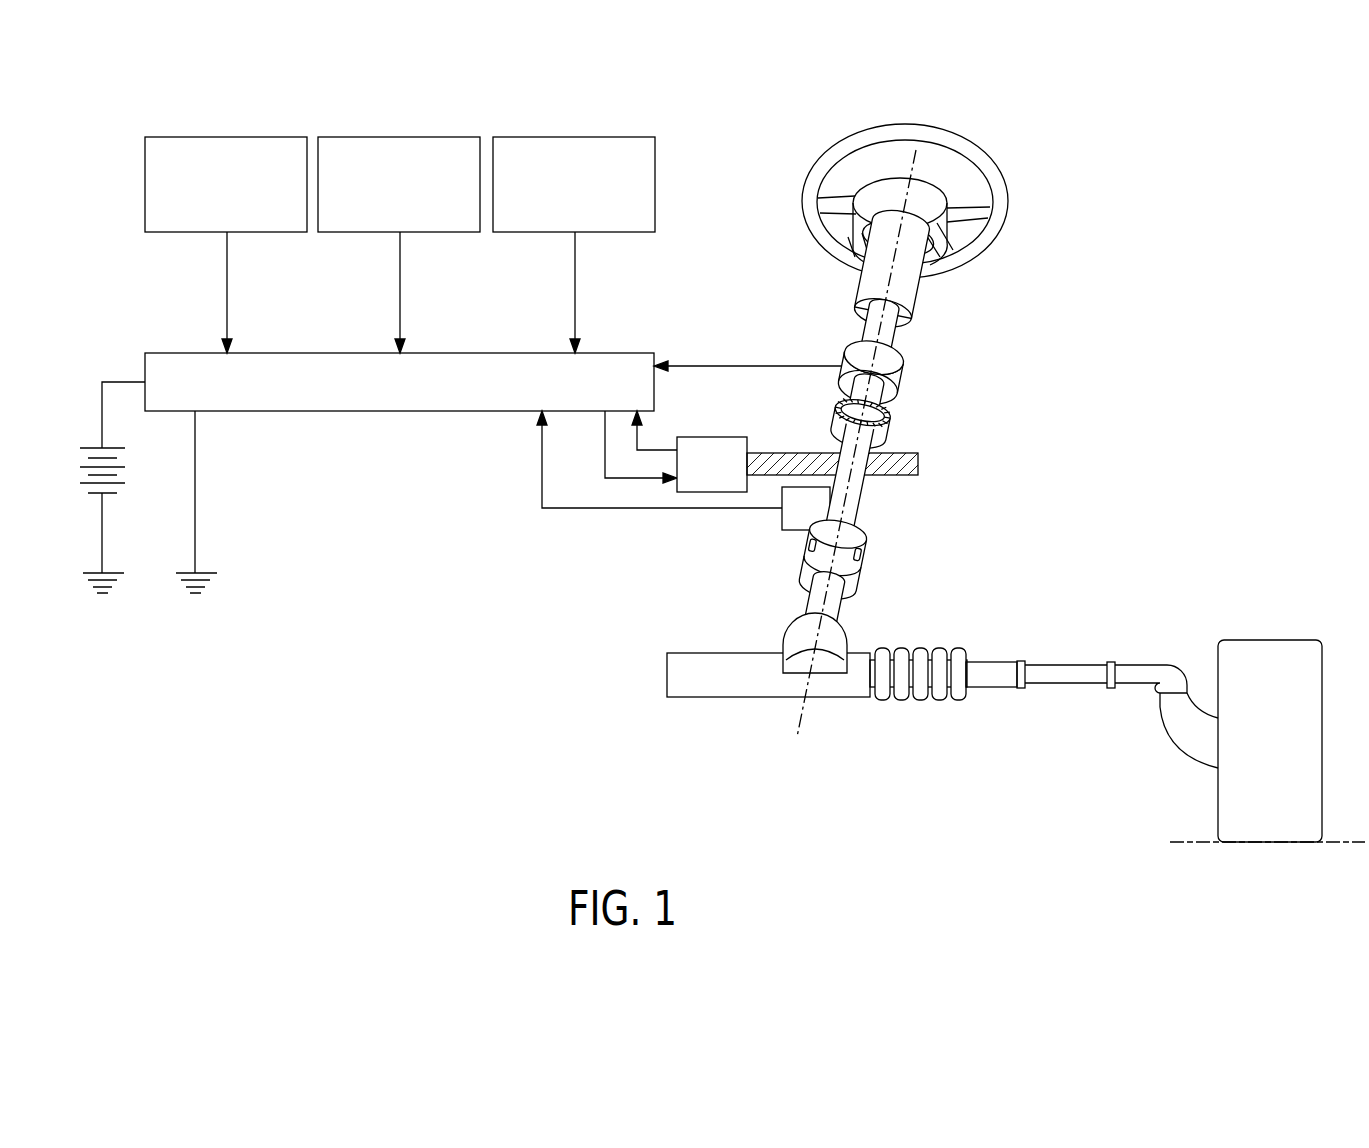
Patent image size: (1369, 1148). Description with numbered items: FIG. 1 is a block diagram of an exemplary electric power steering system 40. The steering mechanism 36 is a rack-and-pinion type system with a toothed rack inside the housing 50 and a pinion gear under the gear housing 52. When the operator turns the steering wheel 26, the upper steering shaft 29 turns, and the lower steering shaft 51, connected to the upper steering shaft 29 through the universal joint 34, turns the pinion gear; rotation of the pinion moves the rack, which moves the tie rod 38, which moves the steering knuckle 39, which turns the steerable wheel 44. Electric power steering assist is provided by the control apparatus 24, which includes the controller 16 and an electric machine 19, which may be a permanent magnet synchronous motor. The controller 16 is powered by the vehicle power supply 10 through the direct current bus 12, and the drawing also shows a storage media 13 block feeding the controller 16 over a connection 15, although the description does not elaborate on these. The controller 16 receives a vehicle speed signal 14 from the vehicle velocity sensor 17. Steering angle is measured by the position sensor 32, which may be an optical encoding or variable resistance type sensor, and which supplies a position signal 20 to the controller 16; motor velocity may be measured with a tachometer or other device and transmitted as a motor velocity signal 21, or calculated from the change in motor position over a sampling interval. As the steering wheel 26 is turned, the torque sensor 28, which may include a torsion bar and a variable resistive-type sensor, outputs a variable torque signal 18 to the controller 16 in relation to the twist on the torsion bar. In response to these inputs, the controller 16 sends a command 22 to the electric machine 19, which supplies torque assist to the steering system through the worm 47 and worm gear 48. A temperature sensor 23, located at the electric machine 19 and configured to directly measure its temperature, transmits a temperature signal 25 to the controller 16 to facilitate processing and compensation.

The vehicle power supply 10 is at (85, 475).
The direct current bus 12 is at (118, 382).
The storage media 13 is at (226, 137).
The vehicle speed signal 14 is at (399, 268).
The storage media signal 15 is at (226, 268).
The controller 16 is at (367, 413).
The vehicle velocity sensor 17 is at (400, 137).
The torque signal 18 is at (757, 366).
The electric machine 19 is at (722, 437).
The position signal 20 is at (670, 511).
The motor velocity signal 21 is at (660, 450).
The command 22 is at (618, 480).
The temperature sensor 23 is at (573, 137).
The control apparatus 24 is at (1105, 350).
The temperature signal 25 is at (574, 268).
The steering wheel 26 is at (960, 157).
The torque sensor 28 is at (897, 368).
The upper steering shaft 29 is at (858, 335).
The position sensor 32 is at (780, 518).
The universal joint 34 is at (860, 560).
The steering mechanism 36 is at (950, 638).
The tie rod 38 is at (1060, 685).
The steering knuckle 39 is at (1187, 728).
The electric power steering system 40 is at (1188, 450).
The steerable wheel 44 is at (1257, 652).
The worm 47 is at (905, 467).
The worm gear 48 is at (875, 428).
The housing 50 is at (707, 690).
The lower steering shaft 51 is at (840, 610).
The gear housing 52 is at (790, 635).